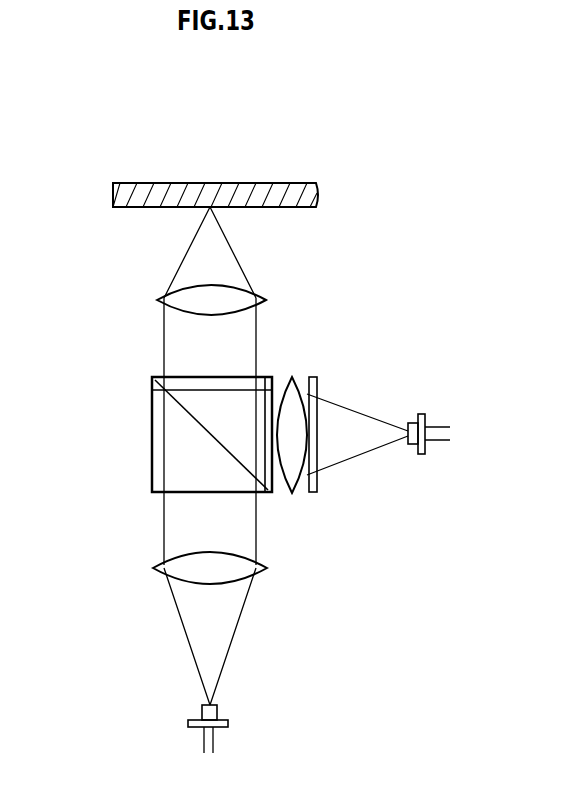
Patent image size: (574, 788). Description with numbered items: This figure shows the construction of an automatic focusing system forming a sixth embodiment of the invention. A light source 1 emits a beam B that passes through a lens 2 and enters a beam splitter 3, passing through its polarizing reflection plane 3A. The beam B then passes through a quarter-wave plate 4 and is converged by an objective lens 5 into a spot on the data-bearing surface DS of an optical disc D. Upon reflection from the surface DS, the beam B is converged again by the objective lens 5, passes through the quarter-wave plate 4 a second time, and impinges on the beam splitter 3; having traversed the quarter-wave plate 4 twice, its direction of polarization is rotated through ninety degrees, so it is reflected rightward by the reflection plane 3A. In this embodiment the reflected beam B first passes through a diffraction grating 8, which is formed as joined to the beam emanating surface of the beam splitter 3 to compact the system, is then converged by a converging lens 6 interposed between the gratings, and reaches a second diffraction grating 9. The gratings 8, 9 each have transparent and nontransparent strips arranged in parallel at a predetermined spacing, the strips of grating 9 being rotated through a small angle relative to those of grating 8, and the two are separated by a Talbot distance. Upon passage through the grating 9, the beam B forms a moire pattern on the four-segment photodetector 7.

The light source 1 is at (217, 712).
The collimating lens 2 is at (262, 567).
The beam splitter 3 is at (152, 478).
The polarizing reflection plane 3A is at (152, 421).
The quarter-wave plate 4 is at (152, 378).
The objective lens 5 is at (160, 300).
The converging lens 6 is at (293, 376).
The four-segment photodetector 7 is at (410, 423).
The diffraction grating 8 is at (268, 377).
The diffraction grating 9 is at (317, 380).
The beam B is at (232, 646).
The optical disc D is at (273, 183).
The data-bearing surface DS is at (271, 213).